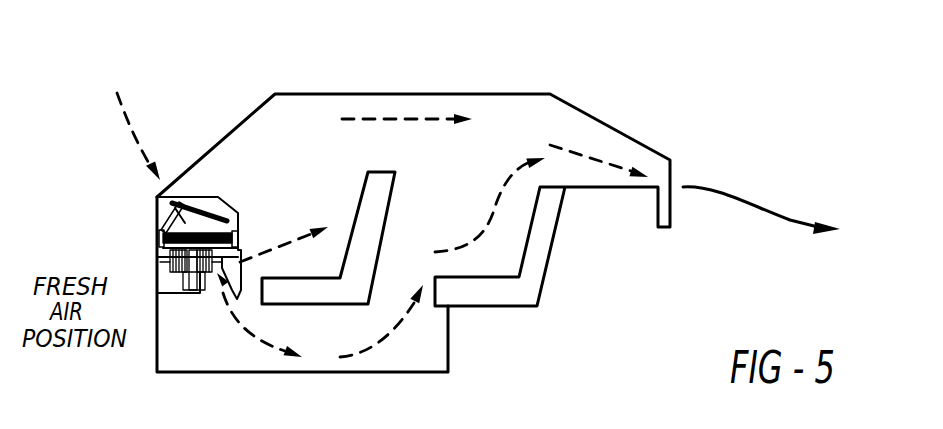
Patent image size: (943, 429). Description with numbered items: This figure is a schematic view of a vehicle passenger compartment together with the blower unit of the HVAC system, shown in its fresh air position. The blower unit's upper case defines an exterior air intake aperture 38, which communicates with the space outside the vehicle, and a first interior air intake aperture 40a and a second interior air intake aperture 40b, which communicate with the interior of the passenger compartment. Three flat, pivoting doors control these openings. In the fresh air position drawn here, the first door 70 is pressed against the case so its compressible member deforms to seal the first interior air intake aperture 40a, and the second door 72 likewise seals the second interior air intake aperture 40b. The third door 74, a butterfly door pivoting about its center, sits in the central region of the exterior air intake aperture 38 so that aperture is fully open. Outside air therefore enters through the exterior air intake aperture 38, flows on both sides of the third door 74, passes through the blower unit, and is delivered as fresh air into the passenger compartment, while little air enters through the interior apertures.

The exterior air intake aperture 38 is at (143, 201).
The first interior air intake aperture 40a is at (260, 195).
The second interior air intake aperture 40b is at (214, 180).
The first door 70 is at (218, 216).
The second door 72 is at (200, 233).
The third door 74 is at (163, 205).